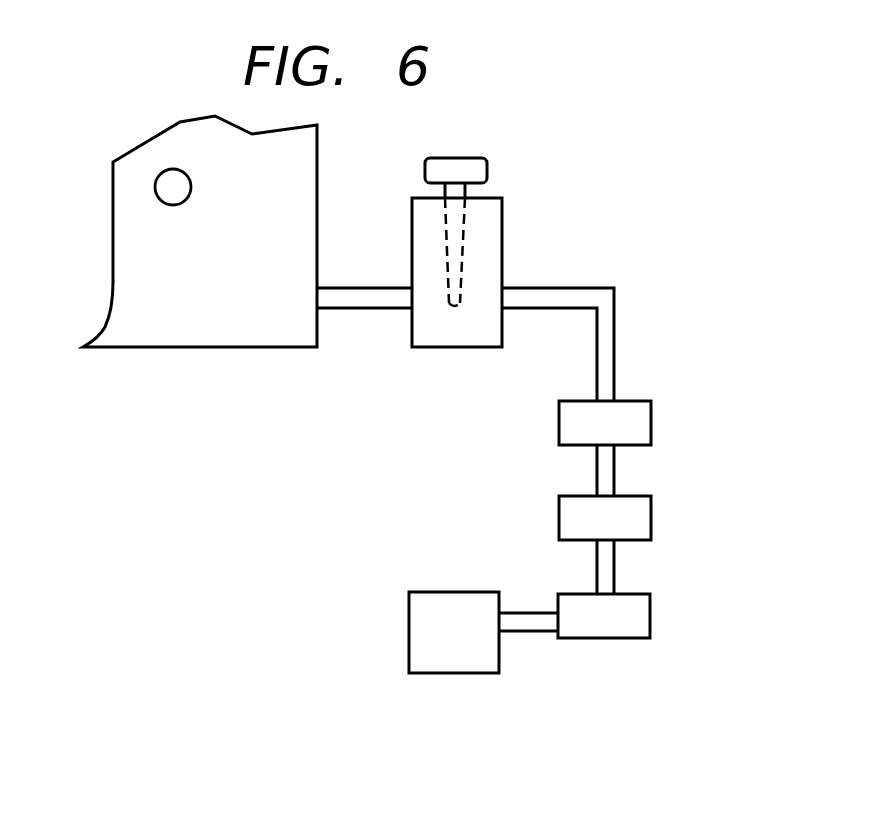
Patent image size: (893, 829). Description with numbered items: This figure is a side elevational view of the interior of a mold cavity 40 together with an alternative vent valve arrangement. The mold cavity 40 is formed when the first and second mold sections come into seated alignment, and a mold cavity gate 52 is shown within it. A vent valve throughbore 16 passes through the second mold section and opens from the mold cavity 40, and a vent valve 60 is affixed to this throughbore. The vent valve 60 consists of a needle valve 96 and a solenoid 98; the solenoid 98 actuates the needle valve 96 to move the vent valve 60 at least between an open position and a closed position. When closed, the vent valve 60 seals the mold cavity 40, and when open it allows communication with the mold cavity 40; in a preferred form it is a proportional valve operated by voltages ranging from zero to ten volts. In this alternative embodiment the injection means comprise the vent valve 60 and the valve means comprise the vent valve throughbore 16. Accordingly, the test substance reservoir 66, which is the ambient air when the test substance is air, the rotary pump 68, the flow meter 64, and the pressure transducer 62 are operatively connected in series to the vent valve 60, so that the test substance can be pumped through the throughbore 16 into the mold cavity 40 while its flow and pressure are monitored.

The vent valve throughbore 16 is at (338, 287).
The mold cavity 40 is at (215, 330).
The mold cavity gate 52 is at (177, 187).
The vent valve 60 is at (418, 396).
The pressure transducer 62 is at (646, 423).
The flow meter 64 is at (645, 515).
The test substance reservoir 66 is at (442, 672).
The rotary pump 68 is at (642, 622).
The needle valve 96 is at (473, 267).
The solenoid 98 is at (462, 158).